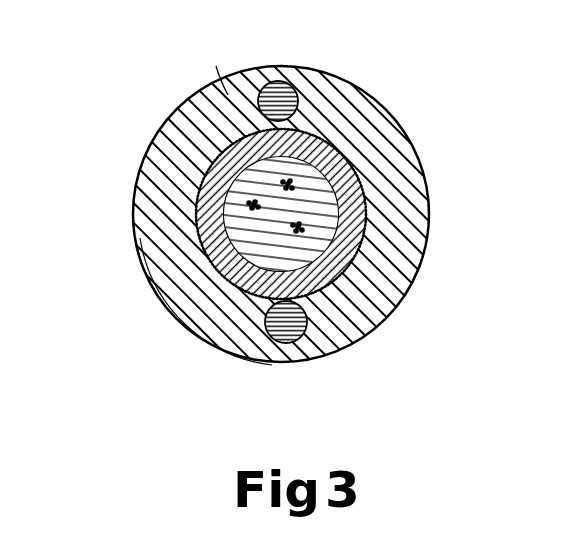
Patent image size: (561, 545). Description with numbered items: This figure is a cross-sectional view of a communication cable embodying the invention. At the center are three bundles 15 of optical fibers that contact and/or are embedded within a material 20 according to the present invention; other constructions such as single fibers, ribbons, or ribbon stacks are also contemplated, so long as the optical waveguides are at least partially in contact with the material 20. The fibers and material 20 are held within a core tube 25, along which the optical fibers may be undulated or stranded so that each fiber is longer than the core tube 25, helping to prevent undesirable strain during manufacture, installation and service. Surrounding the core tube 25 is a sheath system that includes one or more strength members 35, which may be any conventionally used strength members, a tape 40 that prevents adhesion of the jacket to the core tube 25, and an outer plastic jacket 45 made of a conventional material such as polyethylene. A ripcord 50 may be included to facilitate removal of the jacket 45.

The bundles of optical fibers 15 is at (308, 196).
The material 20 is at (360, 196).
The core tube 25 is at (366, 219).
The strength members 35 is at (276, 82).
The tape 40 is at (210, 170).
The outer plastic jacket 45 is at (420, 244).
The ripcord 50 is at (236, 281).